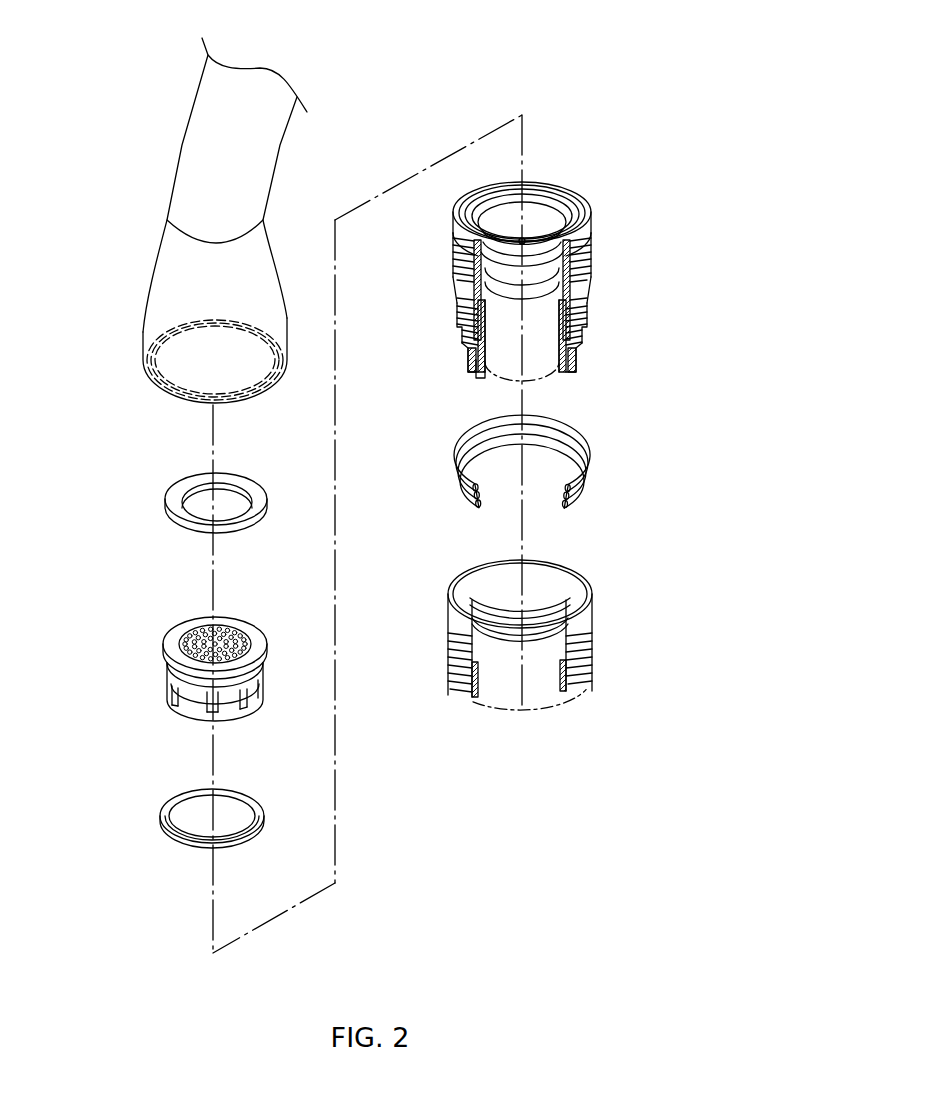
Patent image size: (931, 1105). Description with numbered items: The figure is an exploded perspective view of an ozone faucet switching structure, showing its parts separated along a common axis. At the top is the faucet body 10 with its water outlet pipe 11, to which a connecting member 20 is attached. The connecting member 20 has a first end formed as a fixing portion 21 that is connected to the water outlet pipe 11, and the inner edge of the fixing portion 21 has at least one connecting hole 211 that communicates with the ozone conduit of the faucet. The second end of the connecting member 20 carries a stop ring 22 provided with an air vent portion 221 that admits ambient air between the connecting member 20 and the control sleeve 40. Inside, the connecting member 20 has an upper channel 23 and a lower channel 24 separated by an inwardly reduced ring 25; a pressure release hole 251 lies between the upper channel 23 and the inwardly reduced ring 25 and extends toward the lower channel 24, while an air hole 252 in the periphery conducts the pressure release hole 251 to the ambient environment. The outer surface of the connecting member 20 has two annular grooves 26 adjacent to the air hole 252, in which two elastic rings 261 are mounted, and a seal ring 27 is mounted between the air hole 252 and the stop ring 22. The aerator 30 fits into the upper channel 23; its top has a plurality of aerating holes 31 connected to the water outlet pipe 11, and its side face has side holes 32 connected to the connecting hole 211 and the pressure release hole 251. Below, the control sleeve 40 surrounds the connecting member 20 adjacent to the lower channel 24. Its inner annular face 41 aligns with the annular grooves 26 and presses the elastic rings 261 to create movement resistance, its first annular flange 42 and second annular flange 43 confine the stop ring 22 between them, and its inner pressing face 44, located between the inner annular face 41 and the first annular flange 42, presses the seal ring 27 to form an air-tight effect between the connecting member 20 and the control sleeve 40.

The faucet body 10 is at (167, 118).
The water outlet pipe 11 is at (146, 312).
The connecting member 20 is at (558, 286).
The fixing portion 21 is at (569, 214).
The connecting hole 211 is at (588, 214).
The stop ring 22 is at (568, 374).
The air vent portion 221 is at (474, 366).
The upper channel 23 is at (547, 222).
The lower channel 24 is at (497, 300).
The inwardly reduced ring 25 is at (572, 295).
The pressure release hole 251 is at (585, 320).
The air hole 252 is at (580, 362).
The annular grooves 26 is at (458, 322).
The elastic rings 261 is at (588, 452).
The seal ring 27 is at (575, 500).
The aerator 30 is at (154, 664).
The aerating holes 31 is at (200, 628).
The side holes 32 is at (176, 693).
The control sleeve 40 is at (573, 686).
The inner annular face 41 is at (577, 601).
The first annular flange 42 is at (479, 678).
The second annular flange 43 is at (481, 700).
The inner pressing face 44 is at (582, 613).